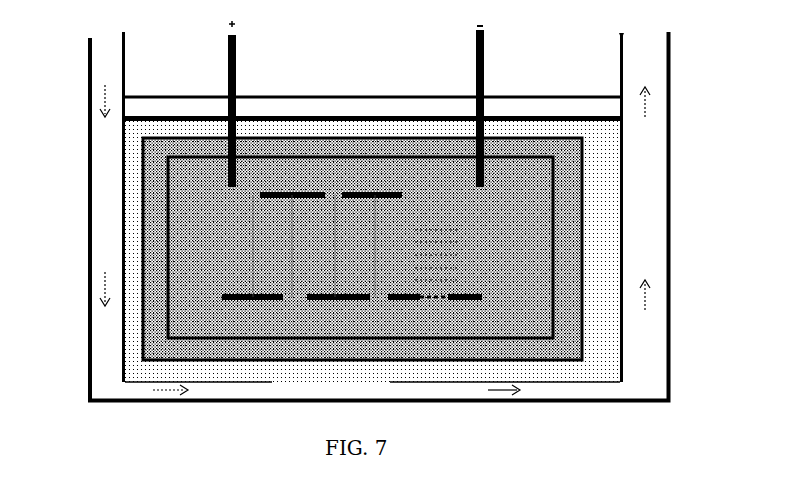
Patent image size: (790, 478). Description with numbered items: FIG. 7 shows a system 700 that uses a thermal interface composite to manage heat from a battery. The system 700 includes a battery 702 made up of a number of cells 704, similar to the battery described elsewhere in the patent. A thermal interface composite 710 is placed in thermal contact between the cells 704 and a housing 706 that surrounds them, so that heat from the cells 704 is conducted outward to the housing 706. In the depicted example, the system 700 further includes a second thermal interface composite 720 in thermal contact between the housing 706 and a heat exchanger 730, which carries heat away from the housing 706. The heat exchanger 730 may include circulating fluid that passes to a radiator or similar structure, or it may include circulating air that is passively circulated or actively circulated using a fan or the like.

The system 700 is at (596, 414).
The battery 702 is at (142, 180).
The cells 704 is at (142, 220).
The housing 706 is at (142, 301).
The thermal interface composite 710 is at (533, 243).
The second thermal interface composite 720 is at (620, 330).
The heat exchanger 730 is at (637, 147).